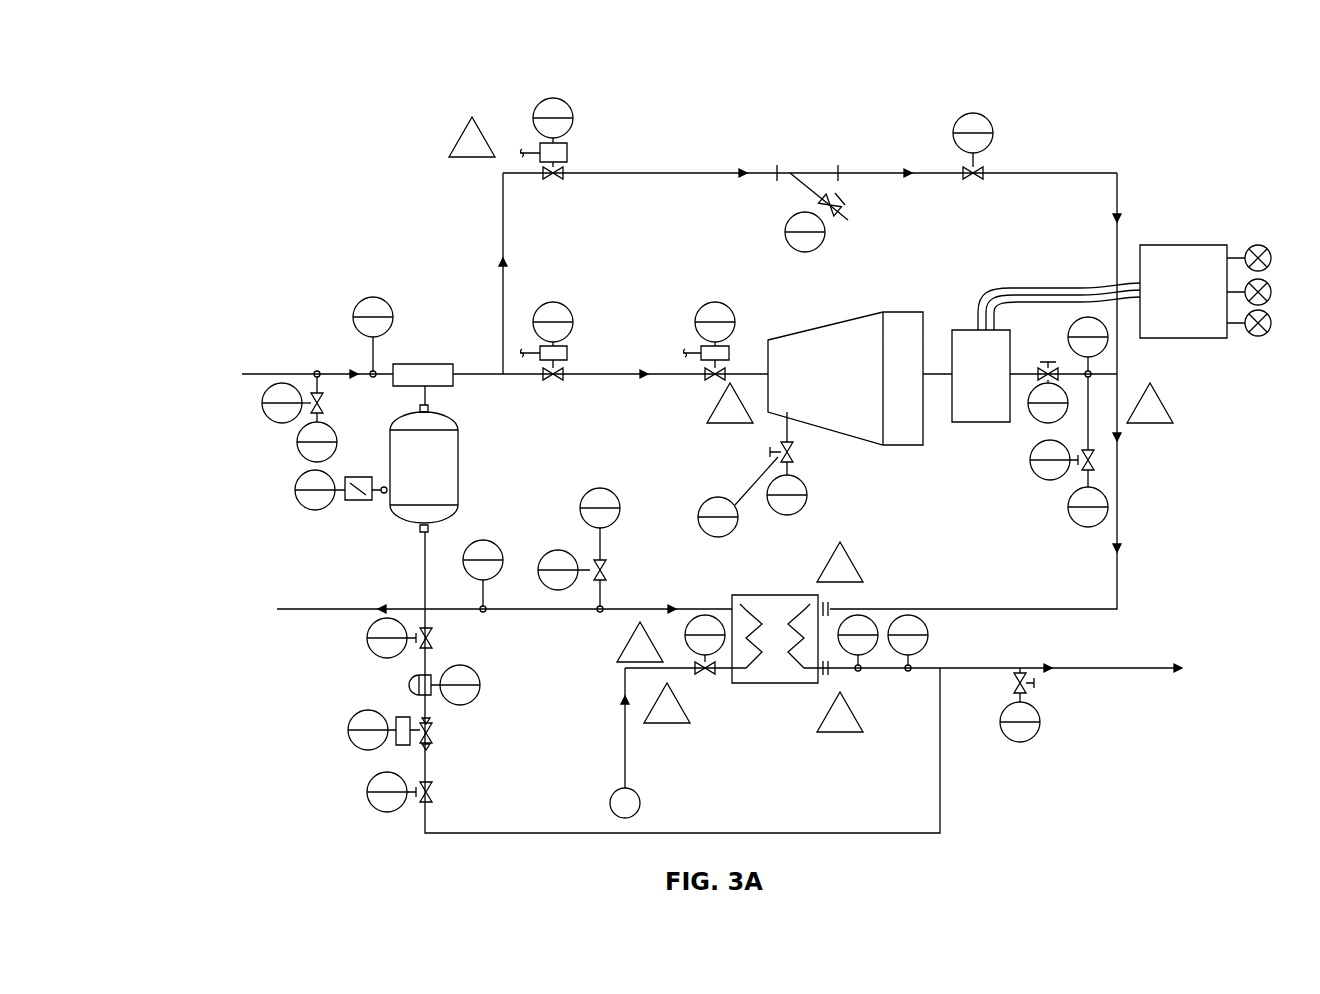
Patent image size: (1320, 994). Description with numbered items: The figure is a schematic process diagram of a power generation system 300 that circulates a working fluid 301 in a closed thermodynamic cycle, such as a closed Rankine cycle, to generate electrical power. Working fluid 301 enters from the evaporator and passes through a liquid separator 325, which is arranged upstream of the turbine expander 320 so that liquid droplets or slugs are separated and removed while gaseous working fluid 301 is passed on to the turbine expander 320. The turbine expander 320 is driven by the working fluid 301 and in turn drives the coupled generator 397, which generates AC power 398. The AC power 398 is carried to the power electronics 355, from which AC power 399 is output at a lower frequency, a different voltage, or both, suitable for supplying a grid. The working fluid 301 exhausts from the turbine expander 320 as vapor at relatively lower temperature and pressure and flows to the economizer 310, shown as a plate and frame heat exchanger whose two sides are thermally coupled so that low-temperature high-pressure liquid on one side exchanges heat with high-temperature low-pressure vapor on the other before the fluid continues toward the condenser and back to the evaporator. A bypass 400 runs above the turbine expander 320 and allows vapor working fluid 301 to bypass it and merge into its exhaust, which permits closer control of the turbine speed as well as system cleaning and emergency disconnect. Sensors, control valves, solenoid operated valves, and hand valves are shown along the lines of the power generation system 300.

The power generation system 300 is at (197, 76).
The working fluid 301 is at (290, 372).
The economizer 310 is at (766, 593).
The turbine expander 320 is at (851, 385).
The liquid separator 325 is at (464, 467).
The power electronics 355 is at (1202, 241).
The generator 397 is at (979, 426).
The AC power 398 is at (1071, 284).
The AC power 399 is at (1242, 246).
The bypass 400 is at (650, 168).